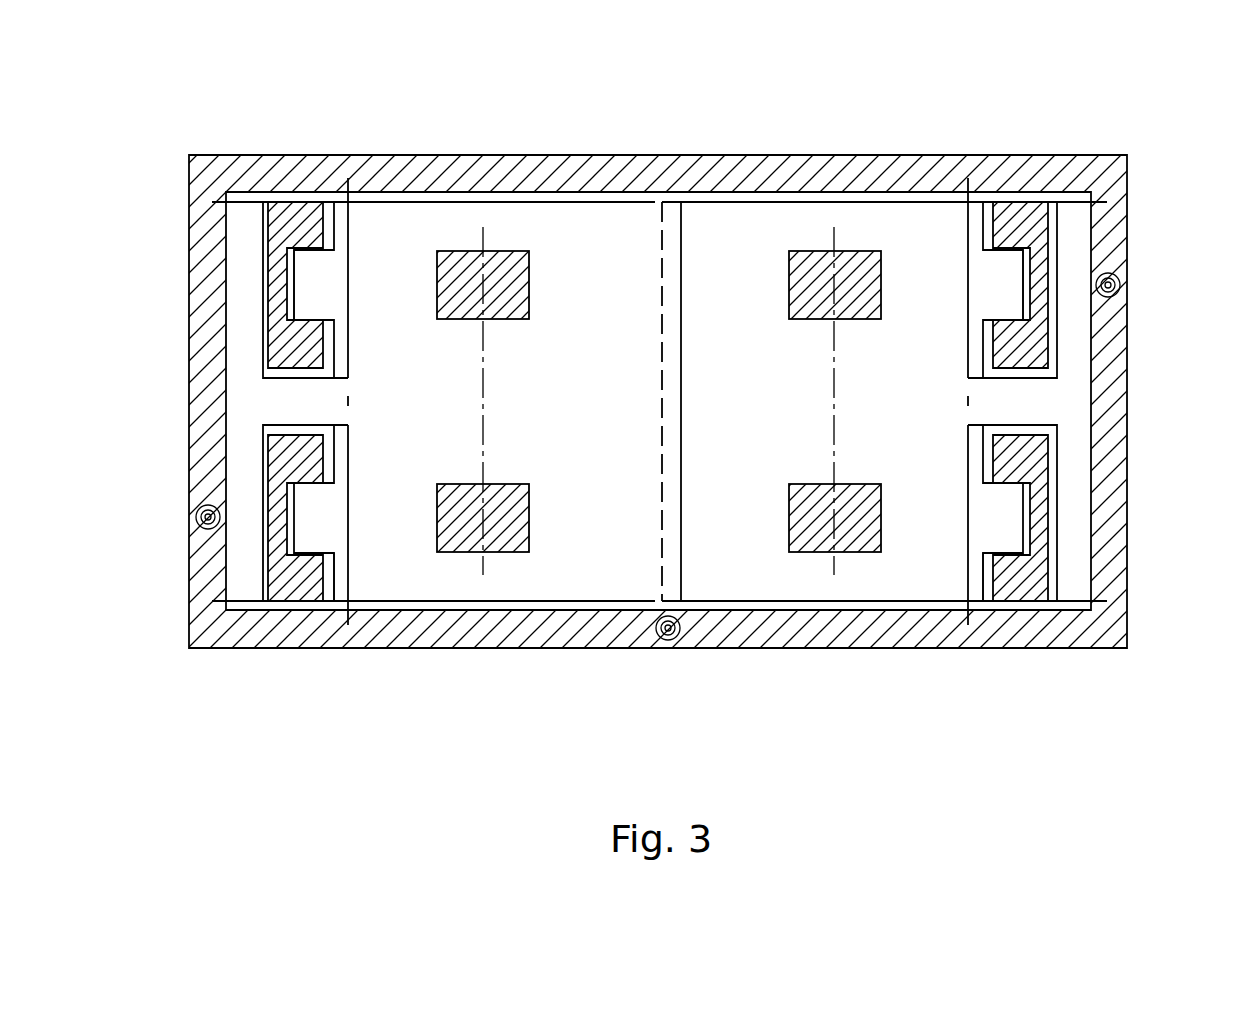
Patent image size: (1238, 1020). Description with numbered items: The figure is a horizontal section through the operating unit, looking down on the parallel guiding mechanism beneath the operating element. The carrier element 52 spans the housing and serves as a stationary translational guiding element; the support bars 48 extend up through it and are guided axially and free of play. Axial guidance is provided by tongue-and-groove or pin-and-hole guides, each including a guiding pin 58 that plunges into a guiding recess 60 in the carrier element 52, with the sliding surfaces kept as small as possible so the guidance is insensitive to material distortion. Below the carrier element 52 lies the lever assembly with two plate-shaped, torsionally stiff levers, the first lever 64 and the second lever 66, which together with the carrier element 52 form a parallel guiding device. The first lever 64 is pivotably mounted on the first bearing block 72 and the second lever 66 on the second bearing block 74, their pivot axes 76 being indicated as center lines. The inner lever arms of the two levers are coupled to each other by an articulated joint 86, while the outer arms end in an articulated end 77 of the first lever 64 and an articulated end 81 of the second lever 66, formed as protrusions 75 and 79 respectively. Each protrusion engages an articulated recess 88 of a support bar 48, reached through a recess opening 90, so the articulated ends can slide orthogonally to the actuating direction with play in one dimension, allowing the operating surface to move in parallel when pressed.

The support bar 48 is at (303, 585).
The carrier element 52 is at (1127, 215).
The guiding pin 58 is at (205, 520).
The guiding recess 60 is at (171, 497).
The first lever 64 is at (499, 180).
The second lever 66 is at (849, 180).
The first bearing block 72 is at (455, 262).
The second bearing block 74 is at (865, 262).
The protrusion 75 is at (287, 295).
The pivot axis 76 is at (483, 355).
The articulated end 77 is at (339, 578).
The protrusion 79 is at (1010, 297).
The articulated end 81 is at (964, 574).
The articulated joint 86 is at (628, 360).
The articulated recess 88 is at (292, 280).
The recess opening 90 is at (331, 225).